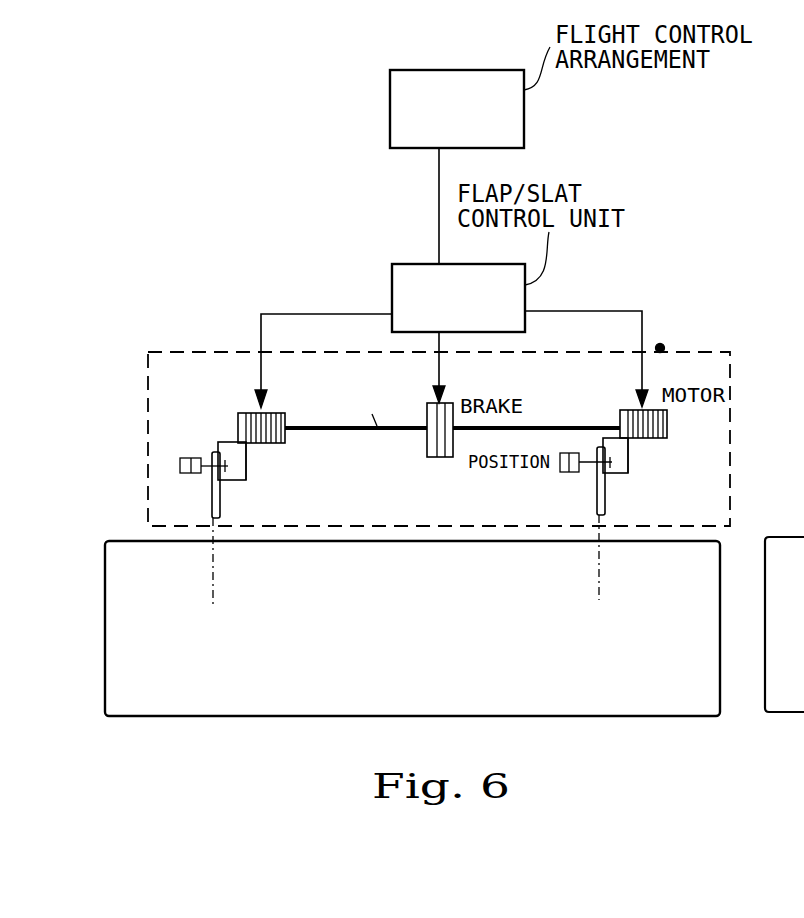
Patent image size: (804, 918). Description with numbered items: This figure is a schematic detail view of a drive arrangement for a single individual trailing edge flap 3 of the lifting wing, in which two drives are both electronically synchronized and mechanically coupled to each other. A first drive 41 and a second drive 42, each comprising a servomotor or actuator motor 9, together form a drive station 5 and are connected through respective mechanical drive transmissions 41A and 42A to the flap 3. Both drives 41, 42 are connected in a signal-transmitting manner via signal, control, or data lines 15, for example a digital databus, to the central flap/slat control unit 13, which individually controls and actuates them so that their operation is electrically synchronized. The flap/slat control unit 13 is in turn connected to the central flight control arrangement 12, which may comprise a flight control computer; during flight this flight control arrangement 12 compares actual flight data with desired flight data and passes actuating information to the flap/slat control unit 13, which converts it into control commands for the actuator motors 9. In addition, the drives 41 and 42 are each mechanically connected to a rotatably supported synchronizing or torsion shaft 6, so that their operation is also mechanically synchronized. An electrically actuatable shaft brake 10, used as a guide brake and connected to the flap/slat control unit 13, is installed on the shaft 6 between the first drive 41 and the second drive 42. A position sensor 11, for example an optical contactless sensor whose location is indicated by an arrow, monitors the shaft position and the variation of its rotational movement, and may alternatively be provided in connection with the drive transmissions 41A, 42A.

The trailing edge flap 3 is at (145, 540).
The drive station 5 is at (665, 344).
The shaft 6 is at (512, 426).
The actuator motor 9 is at (478, 408).
The shaft brake 10 is at (418, 466).
The position sensor 11 is at (243, 507).
The flight control arrangement 12 is at (461, 124).
The flap/slat control unit 13 is at (471, 309).
The signal, control, or data lines 15 is at (441, 373).
The first drive 41 is at (667, 437).
The drive transmission 41A is at (605, 495).
The second drive 42 is at (253, 412).
The drive transmission 42A is at (212, 495).